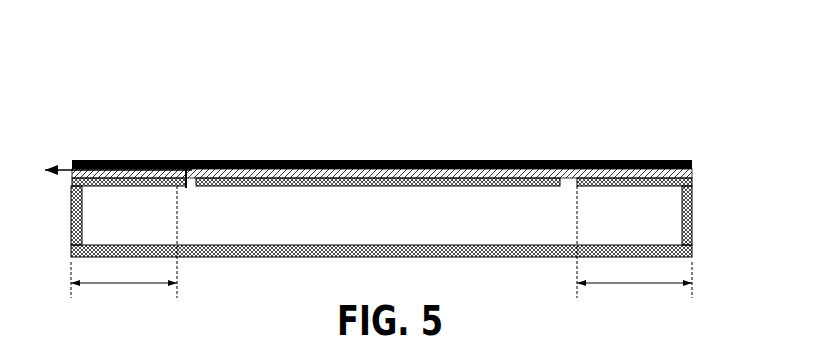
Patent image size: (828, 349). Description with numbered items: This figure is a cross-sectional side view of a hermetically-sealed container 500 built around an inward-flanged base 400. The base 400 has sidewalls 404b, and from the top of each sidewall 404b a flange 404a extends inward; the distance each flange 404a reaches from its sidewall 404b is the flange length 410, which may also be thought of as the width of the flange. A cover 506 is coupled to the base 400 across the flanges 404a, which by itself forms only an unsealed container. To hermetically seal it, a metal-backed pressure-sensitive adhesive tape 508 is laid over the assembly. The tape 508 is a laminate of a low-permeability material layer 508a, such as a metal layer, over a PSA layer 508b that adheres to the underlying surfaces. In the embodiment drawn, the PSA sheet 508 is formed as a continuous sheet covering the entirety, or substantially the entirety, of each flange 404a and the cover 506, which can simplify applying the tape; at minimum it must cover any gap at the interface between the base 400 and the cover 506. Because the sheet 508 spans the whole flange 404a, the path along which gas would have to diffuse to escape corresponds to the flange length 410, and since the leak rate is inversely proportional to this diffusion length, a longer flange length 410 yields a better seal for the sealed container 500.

The hermetically-sealed container 500 is at (136, 79).
The inward-flanged base 400 is at (692, 210).
The flange 404a is at (145, 160).
The sidewall 404b is at (70, 214).
The length of flange 410 is at (118, 285).
The cover 506 is at (260, 160).
The metal-backed pressure-sensitive adhesive tape 508 is at (693, 160).
The low-permeability material layer 508a is at (540, 160).
The PSA layer 508b is at (445, 160).